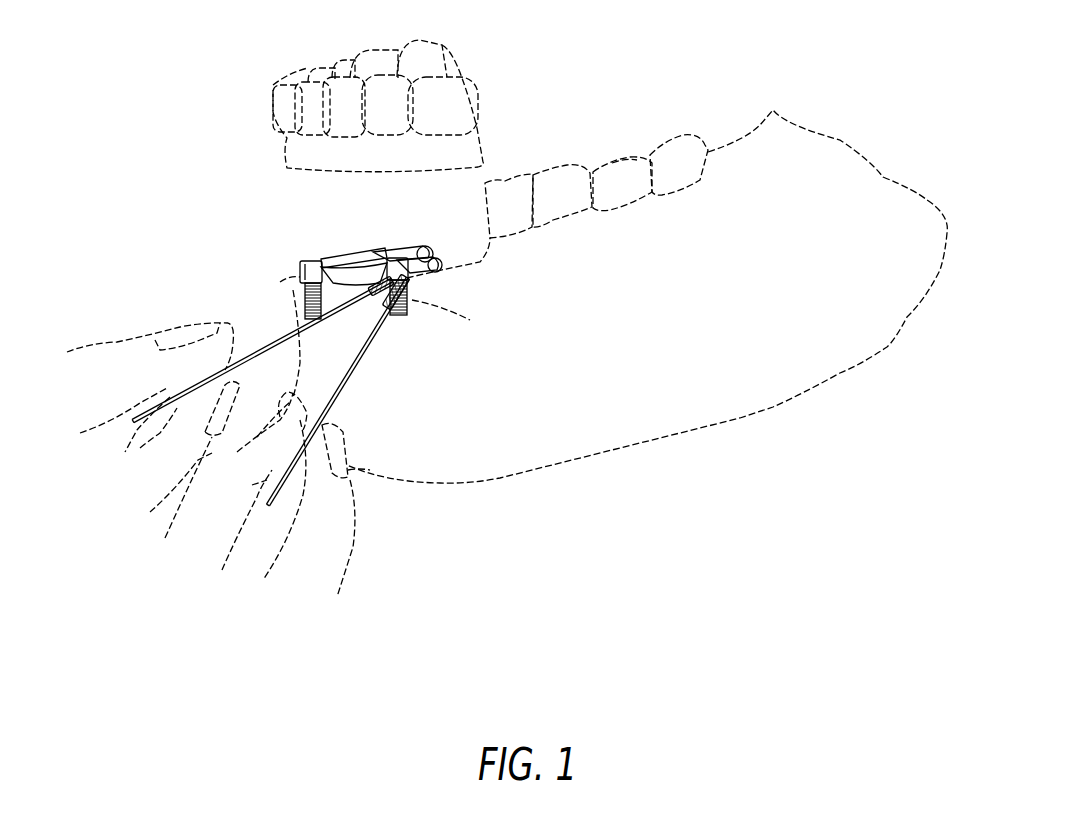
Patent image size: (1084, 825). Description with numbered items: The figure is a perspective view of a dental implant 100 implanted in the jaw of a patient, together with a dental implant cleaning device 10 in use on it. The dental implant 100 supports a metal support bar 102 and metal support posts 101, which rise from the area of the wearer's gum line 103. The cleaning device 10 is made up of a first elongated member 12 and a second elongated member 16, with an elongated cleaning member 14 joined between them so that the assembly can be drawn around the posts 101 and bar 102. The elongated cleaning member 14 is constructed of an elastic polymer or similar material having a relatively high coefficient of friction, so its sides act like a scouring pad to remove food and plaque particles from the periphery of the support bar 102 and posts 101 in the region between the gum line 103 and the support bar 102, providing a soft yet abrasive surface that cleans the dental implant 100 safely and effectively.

The dental implant cleaning device 10 is at (402, 390).
The first elongated member 12 is at (172, 392).
The elongated cleaning member 14 is at (405, 300).
The second elongated member 16 is at (373, 343).
The dental implant 100 is at (378, 164).
The support post 101 is at (385, 250).
The support bar 102 is at (422, 247).
The gum line 103 is at (480, 262).